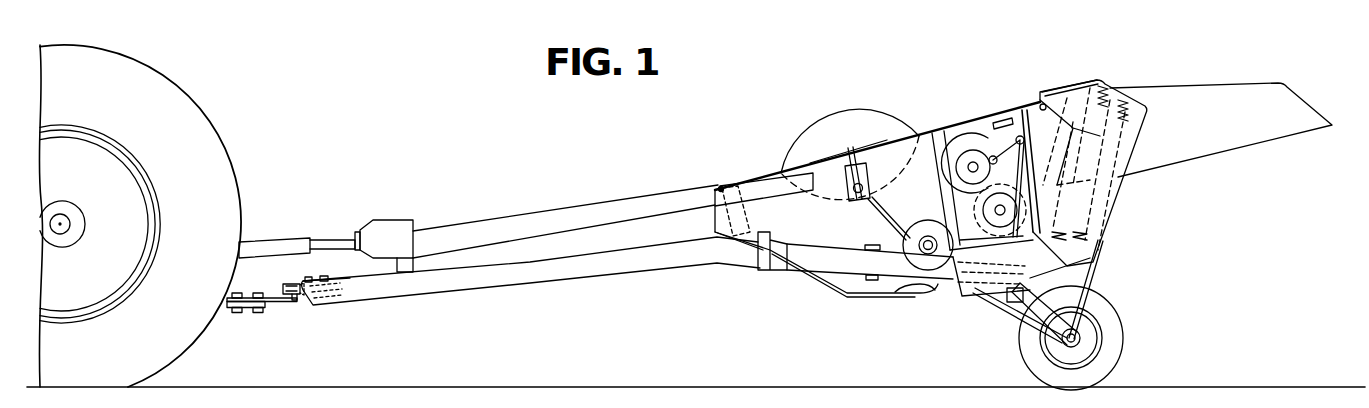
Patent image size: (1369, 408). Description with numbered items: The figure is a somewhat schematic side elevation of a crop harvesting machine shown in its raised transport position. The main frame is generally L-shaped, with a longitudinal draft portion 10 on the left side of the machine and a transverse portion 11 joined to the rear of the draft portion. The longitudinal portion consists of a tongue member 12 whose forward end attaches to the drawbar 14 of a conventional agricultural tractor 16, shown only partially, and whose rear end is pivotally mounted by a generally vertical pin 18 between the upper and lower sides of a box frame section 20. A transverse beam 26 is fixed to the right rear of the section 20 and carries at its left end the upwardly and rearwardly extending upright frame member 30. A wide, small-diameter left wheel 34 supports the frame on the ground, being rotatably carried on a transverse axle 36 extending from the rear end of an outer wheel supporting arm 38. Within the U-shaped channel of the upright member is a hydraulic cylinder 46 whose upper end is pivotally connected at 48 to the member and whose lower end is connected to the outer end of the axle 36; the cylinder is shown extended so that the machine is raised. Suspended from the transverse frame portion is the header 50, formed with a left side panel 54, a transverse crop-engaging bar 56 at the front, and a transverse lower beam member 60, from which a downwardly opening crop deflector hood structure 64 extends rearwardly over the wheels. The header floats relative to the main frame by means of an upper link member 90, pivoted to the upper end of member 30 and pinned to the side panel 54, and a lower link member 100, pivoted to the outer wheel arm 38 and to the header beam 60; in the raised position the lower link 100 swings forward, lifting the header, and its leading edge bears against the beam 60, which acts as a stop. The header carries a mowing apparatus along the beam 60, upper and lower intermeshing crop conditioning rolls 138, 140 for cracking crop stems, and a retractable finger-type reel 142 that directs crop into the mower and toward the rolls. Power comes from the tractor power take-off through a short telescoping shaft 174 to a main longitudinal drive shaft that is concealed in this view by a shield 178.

The longitudinal draft portion 10 is at (628, 259).
The transverse portion 11 is at (999, 300).
The tongue member 12 is at (482, 283).
The drawbar 14 is at (245, 307).
The tractor 16 is at (209, 100).
The vertical pin 18 is at (873, 246).
The box frame section 20 is at (810, 266).
The transverse beam 26 is at (958, 297).
The left upright frame member 30 is at (1105, 155).
The left wheel 34 is at (1120, 329).
The transverse axle 36 is at (1103, 347).
The outer wheel supporting arm 38 is at (1040, 326).
The hydraulic cylinder 46 is at (1090, 263).
The pivotal connection 48 is at (1126, 136).
The header 50 is at (907, 162).
The left side panel 54 is at (796, 203).
The crop-engaging bar 56 is at (721, 186).
The lower beam member 60 is at (932, 300).
The crop deflector hood structure 64 is at (1212, 74).
The upper link member 90 is at (1073, 79).
The lower link member 100 is at (1003, 303).
The upper crop conditioning roll 138 is at (963, 140).
The lower crop conditioning roll 140 is at (1066, 142).
The reel 142 is at (844, 106).
The telescoping shaft 174 is at (276, 243).
The shield 178 is at (533, 219).